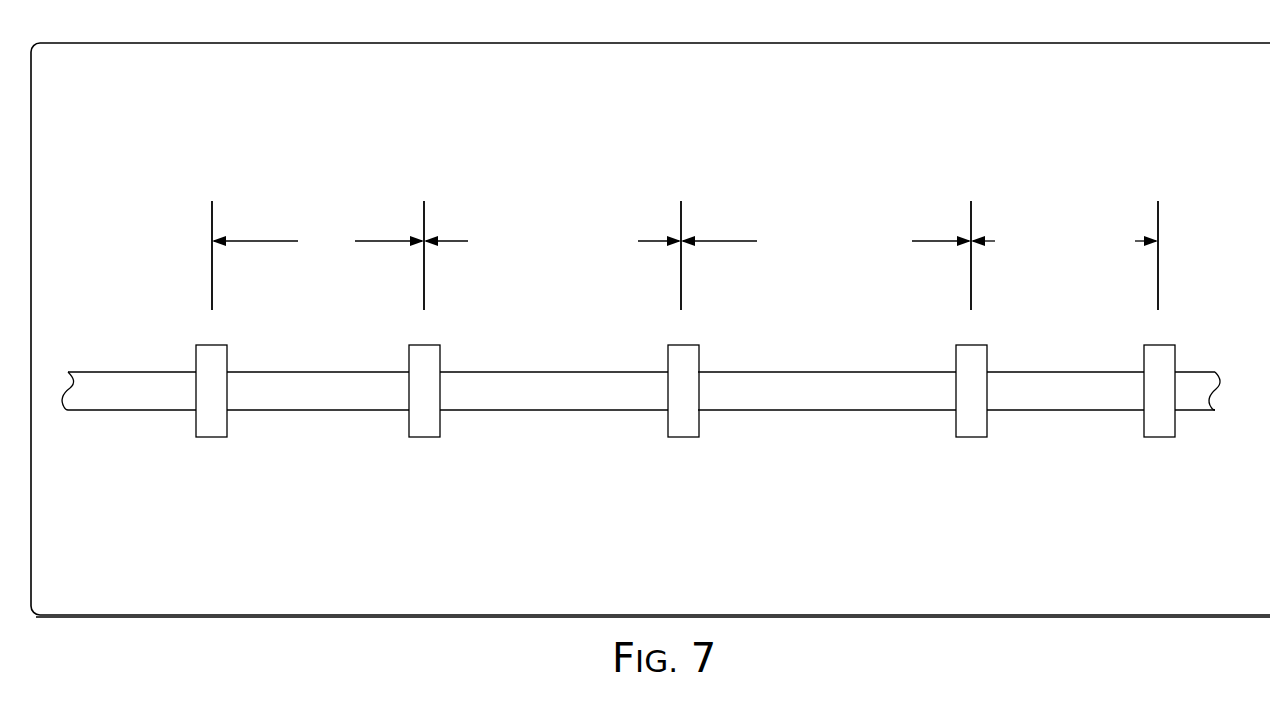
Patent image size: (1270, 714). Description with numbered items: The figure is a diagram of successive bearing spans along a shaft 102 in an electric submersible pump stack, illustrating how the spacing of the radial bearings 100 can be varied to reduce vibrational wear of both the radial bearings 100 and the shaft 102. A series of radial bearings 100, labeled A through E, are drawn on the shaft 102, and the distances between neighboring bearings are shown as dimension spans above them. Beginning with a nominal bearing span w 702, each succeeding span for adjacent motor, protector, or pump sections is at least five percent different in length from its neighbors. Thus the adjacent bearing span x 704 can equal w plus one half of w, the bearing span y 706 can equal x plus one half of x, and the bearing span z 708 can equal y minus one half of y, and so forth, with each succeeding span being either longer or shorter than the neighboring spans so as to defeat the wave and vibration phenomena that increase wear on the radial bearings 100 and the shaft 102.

The radial bearing 100 is at (212, 458).
The shaft 102 is at (138, 416).
The bearing span w 702 is at (314, 210).
The bearing span x 704 is at (538, 209).
The bearing span y 706 is at (816, 208).
The bearing span z 708 is at (1063, 208).